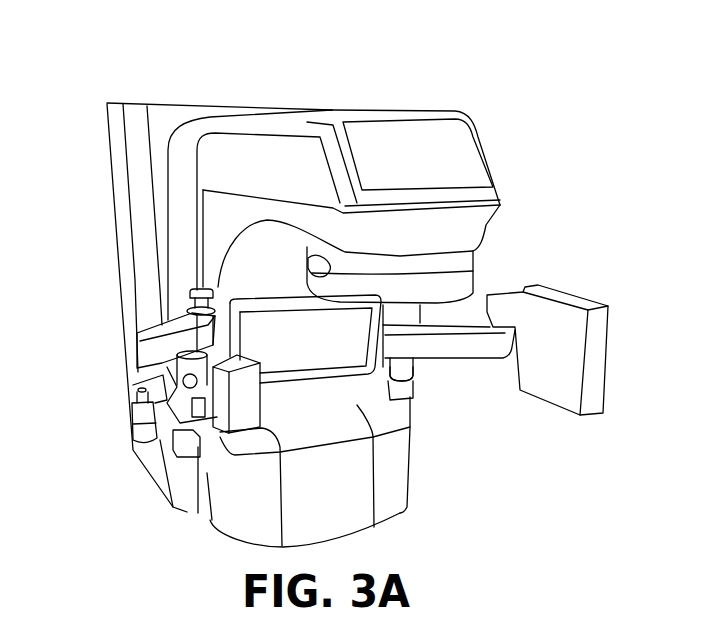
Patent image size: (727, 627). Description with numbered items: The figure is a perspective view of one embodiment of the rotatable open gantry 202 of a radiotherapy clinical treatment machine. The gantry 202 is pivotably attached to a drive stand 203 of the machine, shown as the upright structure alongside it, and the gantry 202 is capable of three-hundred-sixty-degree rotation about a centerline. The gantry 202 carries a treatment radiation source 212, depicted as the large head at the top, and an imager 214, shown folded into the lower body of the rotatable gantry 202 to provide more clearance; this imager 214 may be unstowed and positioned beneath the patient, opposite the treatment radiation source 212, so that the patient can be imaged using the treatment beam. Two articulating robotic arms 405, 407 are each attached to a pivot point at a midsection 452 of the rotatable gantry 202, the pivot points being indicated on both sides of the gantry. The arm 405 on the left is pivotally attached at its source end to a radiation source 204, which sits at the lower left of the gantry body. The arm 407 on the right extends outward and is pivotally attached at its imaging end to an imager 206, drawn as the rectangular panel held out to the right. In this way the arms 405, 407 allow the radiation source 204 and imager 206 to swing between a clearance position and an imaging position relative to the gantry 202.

The rotatable open gantry 202 is at (392, 73).
The drive stand 203 is at (107, 142).
The radiation source 204 is at (217, 425).
The imager 206 is at (612, 333).
The treatment radiation source 212 is at (493, 242).
The imager 214 is at (365, 513).
The articulating robotic arm 405 is at (145, 360).
The articulating robotic arm 407 is at (477, 360).
The midsection 452 is at (183, 302).